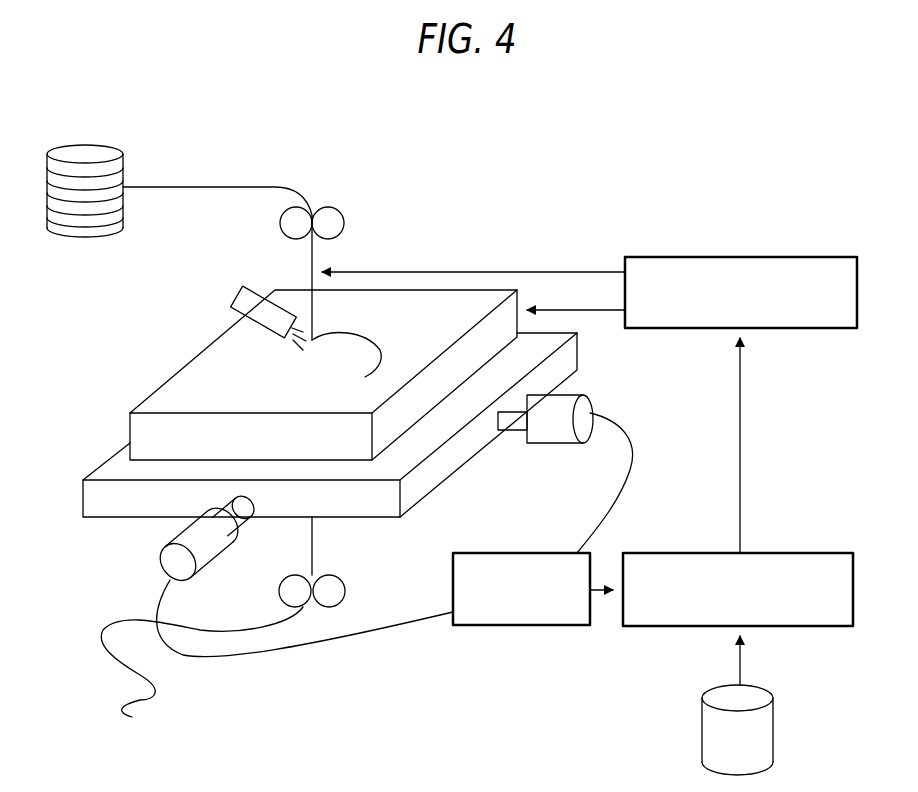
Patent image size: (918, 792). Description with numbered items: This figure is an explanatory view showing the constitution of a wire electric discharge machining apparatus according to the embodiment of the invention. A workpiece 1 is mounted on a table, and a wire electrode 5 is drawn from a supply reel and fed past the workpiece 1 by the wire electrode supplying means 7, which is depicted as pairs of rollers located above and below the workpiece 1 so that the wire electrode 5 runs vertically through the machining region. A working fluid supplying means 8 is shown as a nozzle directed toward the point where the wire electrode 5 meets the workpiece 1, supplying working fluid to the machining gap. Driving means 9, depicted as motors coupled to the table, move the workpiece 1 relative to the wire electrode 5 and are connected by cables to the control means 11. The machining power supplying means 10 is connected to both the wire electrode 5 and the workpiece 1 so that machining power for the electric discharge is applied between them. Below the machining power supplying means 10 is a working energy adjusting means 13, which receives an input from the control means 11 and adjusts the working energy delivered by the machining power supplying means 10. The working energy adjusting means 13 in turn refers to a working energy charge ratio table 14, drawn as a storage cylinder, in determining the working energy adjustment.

The workpiece 1 is at (170, 388).
The wire electrode 5 is at (190, 187).
The wire electrode supplying means 7 is at (340, 225).
The working fluid supplying means 8 is at (240, 301).
The driving means 9 is at (552, 445).
The machining power supplying means 10 is at (745, 257).
The control means 11 is at (525, 553).
The working energy adjusting means 13 is at (787, 553).
The working energy charge ratio table 14 is at (768, 733).